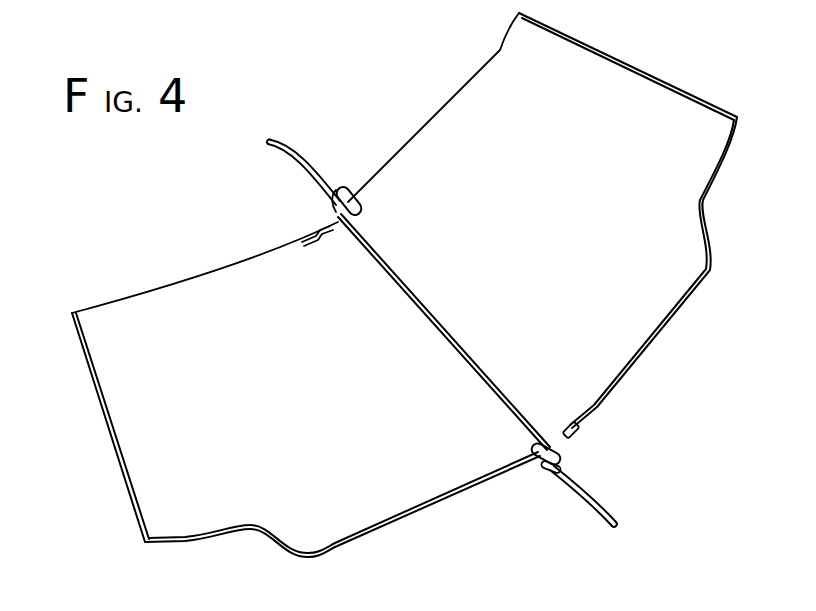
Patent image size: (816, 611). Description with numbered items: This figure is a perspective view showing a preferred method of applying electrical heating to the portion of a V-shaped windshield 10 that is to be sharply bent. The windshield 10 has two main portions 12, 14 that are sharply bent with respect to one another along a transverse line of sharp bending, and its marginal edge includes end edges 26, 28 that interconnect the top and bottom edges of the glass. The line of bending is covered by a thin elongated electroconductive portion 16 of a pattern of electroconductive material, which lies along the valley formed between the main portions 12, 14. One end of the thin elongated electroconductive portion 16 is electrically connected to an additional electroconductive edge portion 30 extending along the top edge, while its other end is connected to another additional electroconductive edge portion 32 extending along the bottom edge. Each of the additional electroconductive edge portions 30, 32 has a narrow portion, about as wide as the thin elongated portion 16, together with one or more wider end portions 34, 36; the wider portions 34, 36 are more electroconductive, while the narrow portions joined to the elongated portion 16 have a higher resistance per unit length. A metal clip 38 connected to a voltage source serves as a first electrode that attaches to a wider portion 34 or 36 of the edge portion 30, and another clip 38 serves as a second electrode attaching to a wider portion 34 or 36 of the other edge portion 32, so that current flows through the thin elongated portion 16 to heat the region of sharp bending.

The V-shaped windshield 10 is at (178, 236).
The main portion 12 is at (560, 219).
The main portion 14 is at (258, 429).
The thin elongated electroconductive portion 16 is at (447, 340).
The end edge 26 is at (108, 447).
The end edge 28 is at (668, 78).
The additional electroconductive edge portion 30 is at (330, 232).
The additional electroconductive edge portion 32 is at (562, 453).
The wider end portion 34 is at (302, 238).
The wider end portion 36 is at (577, 422).
The metal clip 38 is at (352, 190).